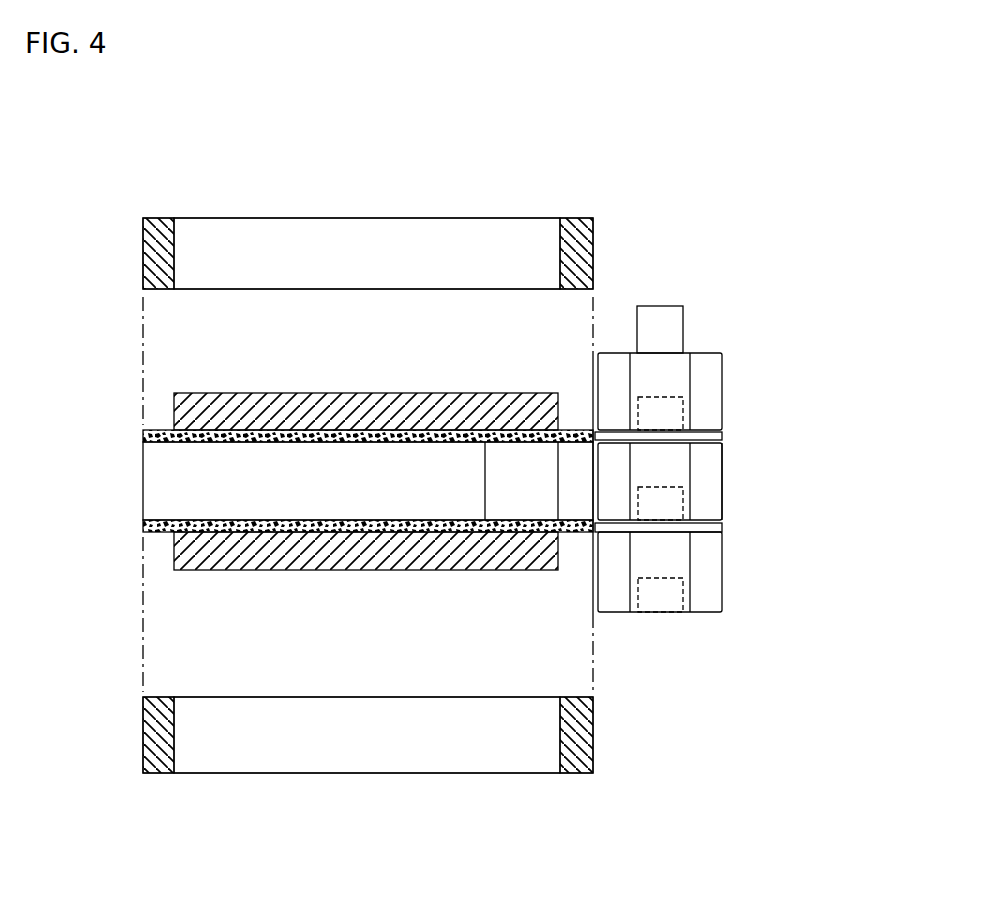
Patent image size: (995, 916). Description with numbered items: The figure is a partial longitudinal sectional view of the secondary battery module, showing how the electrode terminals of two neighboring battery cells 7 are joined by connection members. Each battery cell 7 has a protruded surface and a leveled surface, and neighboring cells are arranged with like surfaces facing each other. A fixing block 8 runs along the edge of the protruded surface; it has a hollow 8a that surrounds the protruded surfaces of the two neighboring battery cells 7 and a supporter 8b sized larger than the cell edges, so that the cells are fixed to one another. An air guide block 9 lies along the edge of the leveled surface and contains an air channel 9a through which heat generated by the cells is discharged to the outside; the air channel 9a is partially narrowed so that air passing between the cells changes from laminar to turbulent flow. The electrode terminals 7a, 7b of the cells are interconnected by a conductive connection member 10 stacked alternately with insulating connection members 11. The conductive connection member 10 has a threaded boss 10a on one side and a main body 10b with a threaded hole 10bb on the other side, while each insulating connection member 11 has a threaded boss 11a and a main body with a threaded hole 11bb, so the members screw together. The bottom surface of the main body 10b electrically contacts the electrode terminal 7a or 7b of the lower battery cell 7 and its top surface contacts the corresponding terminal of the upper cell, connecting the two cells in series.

The battery cell 7 is at (350, 362).
The electrode terminal 7a is at (725, 527).
The electrode terminal 7b is at (627, 430).
The fixing block 8 is at (249, 200).
The hollow 8a is at (450, 235).
The supporter 8b is at (579, 232).
The air guide block 9 is at (130, 481).
The air channel 9a is at (213, 485).
The conductive connection member 10 is at (755, 493).
The boss 10a is at (668, 410).
The main body 10b is at (717, 480).
The hole 10bb is at (678, 505).
The insulating connection member 11 is at (716, 330).
The boss 11a is at (660, 318).
The hole 11bb is at (658, 612).